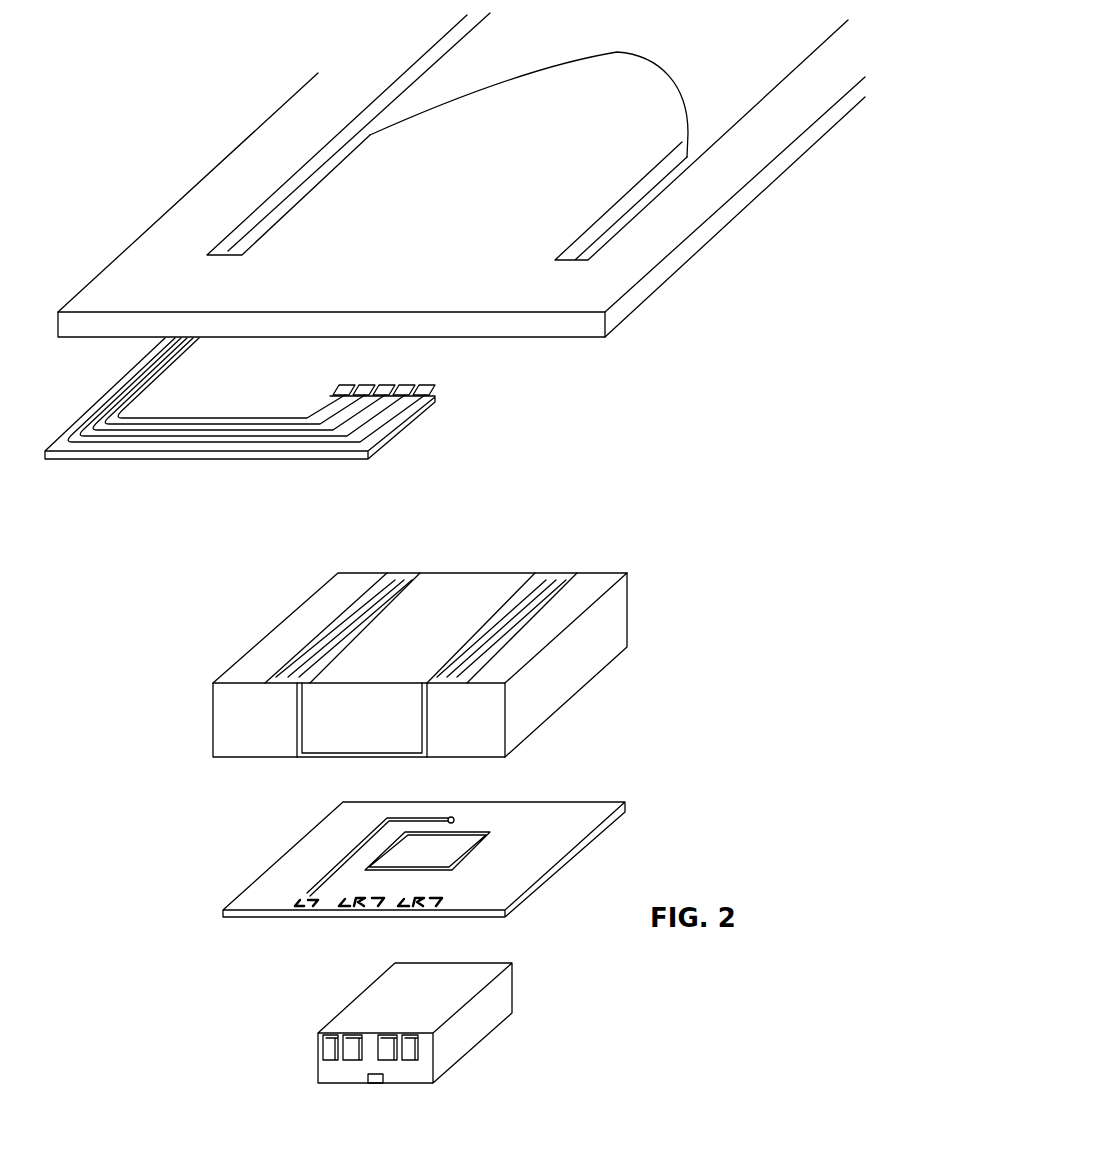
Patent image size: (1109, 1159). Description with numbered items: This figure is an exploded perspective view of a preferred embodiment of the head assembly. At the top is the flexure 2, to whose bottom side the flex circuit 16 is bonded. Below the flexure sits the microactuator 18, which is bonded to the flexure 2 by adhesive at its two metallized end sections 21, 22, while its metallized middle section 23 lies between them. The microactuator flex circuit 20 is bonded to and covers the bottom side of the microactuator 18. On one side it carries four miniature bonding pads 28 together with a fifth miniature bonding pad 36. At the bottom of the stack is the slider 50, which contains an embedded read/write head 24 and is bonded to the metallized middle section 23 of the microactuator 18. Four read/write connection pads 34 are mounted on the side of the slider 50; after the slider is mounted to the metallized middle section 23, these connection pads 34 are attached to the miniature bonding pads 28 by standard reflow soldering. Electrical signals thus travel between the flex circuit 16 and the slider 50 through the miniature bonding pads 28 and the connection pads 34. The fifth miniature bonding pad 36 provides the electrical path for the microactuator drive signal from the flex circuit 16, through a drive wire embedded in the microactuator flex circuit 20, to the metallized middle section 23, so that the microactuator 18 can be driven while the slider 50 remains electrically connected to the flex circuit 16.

The flexure 2 is at (663, 290).
The flex circuit 16 is at (397, 435).
The microactuator 18 is at (482, 641).
The metallized end section 21 is at (310, 598).
The metallized end section 22 is at (623, 592).
The metallized middle section 23 is at (482, 571).
The microactuator flex circuit 20 is at (465, 880).
The fifth miniature bonding pad 36 is at (300, 898).
The miniature bonding pads 28 is at (345, 912).
The slider 50 is at (451, 1043).
The read/write connection pads 34 is at (387, 1042).
The read/write head 24 is at (378, 1083).